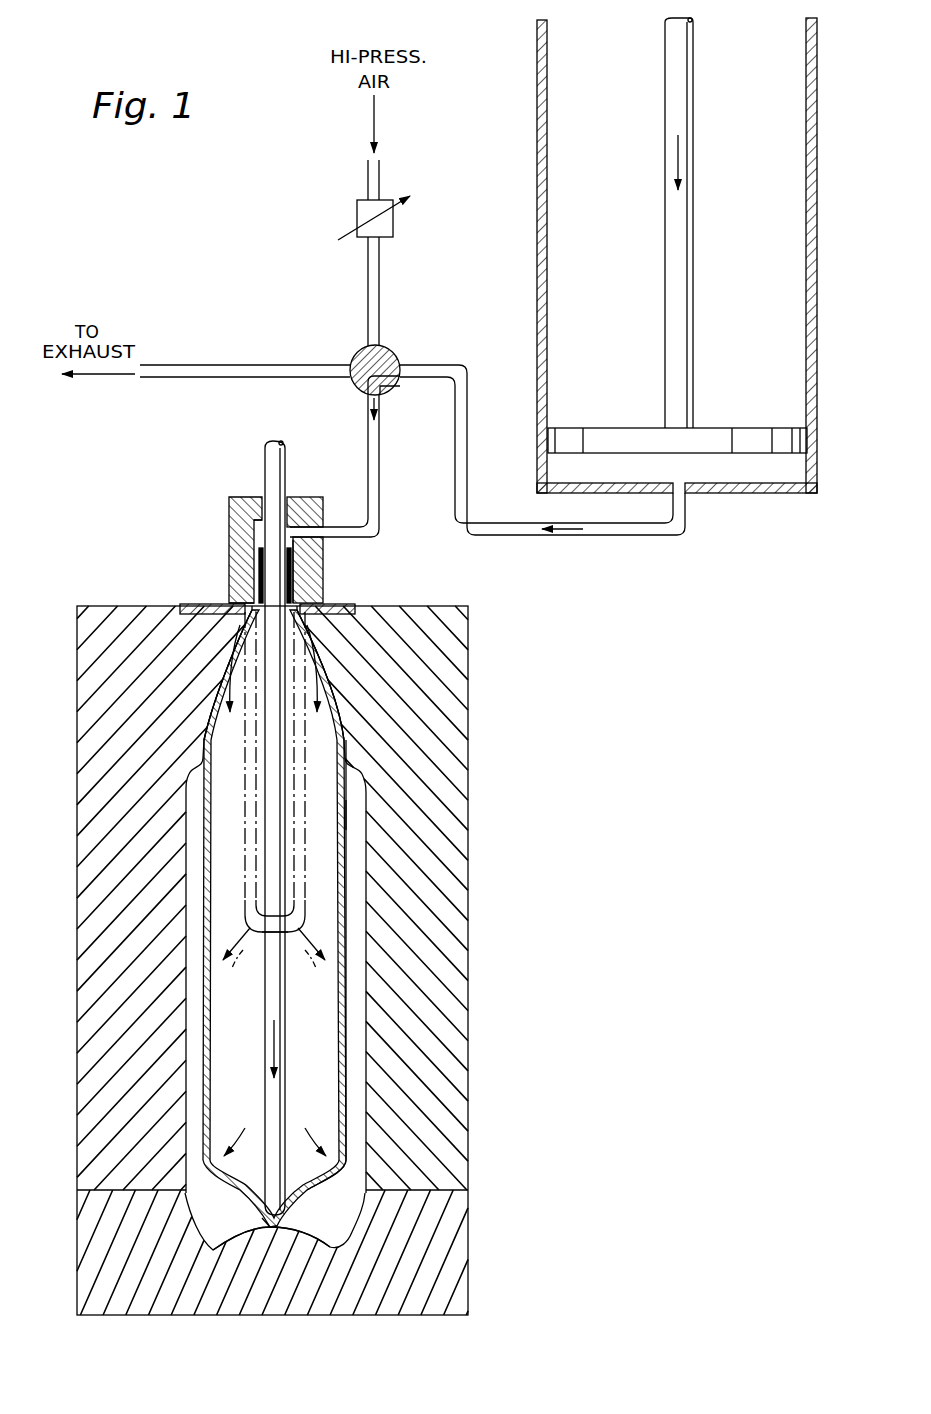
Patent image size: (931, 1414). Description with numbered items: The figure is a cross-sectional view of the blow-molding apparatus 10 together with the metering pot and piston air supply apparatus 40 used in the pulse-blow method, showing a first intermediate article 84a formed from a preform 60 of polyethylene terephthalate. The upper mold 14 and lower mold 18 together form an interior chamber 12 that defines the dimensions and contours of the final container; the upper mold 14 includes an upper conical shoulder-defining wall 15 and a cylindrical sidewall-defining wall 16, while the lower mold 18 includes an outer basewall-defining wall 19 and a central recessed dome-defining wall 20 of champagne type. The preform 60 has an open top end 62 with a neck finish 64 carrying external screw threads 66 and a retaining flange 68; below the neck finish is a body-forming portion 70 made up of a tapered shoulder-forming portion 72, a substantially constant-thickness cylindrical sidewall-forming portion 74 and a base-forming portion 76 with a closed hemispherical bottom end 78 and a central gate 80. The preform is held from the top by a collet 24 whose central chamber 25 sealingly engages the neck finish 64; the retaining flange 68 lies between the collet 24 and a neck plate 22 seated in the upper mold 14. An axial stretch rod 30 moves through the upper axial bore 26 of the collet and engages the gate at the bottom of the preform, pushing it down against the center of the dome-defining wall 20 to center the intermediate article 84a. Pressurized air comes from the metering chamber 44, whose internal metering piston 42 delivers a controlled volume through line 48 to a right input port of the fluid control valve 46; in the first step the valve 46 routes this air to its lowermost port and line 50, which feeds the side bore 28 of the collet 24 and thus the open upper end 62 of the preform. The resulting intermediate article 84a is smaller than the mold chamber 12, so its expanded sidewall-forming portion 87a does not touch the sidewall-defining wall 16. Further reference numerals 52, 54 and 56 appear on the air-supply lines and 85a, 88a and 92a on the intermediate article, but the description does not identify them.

The blow-molding apparatus 10 is at (484, 630).
The interior chamber 12 is at (360, 1040).
The upper mold 14 is at (468, 702).
The upper conical shoulder-defining wall 15 is at (360, 698).
The cylindrical sidewall-defining wall 16 is at (366, 895).
The lower mold 18 is at (470, 1252).
The outer basewall-defining wall 19 is at (372, 1210).
The central recessed dome-defining wall 20 is at (313, 1232).
The neck plate 22 is at (342, 606).
The collet 24 is at (229, 500).
The central chamber 25 is at (262, 527).
The upper axial bore 26 is at (265, 492).
The side bore 28 is at (300, 525).
The axial stretch rod 30 is at (285, 1066).
The metering pot and piston air supply apparatus 40 is at (332, 327).
The internal metering piston 42 is at (713, 428).
The metering pot 44 is at (817, 298).
The fluid control valve 46 is at (390, 352).
The line 48 is at (467, 425).
The line 50 is at (380, 458).
The exhaust conduit 52 is at (248, 378).
The high pressure air line 54 is at (381, 176).
The pressure regulator 56 is at (393, 222).
The preform 60 is at (243, 848).
The open top end 62 is at (258, 560).
The neck finish 64 is at (256, 590).
The external screw threads 66 is at (300, 580).
The retaining flange 68 is at (230, 604).
The body-forming portion 70 is at (250, 752).
The tapered shoulder-forming portion 72 is at (250, 645).
The cylindrical sidewall-forming portion 74 is at (258, 812).
The base-forming portion 76 is at (300, 922).
The closed hemispherical bottom end 78 is at (238, 960).
The central gate 80 is at (308, 960).
The first intermediate article 84a is at (349, 997).
The shoulder portion 85a is at (342, 718).
The expanded sidewall-forming portion 87a is at (355, 822).
The base portion 88a is at (335, 1182).
The bottom center 92a is at (272, 1232).